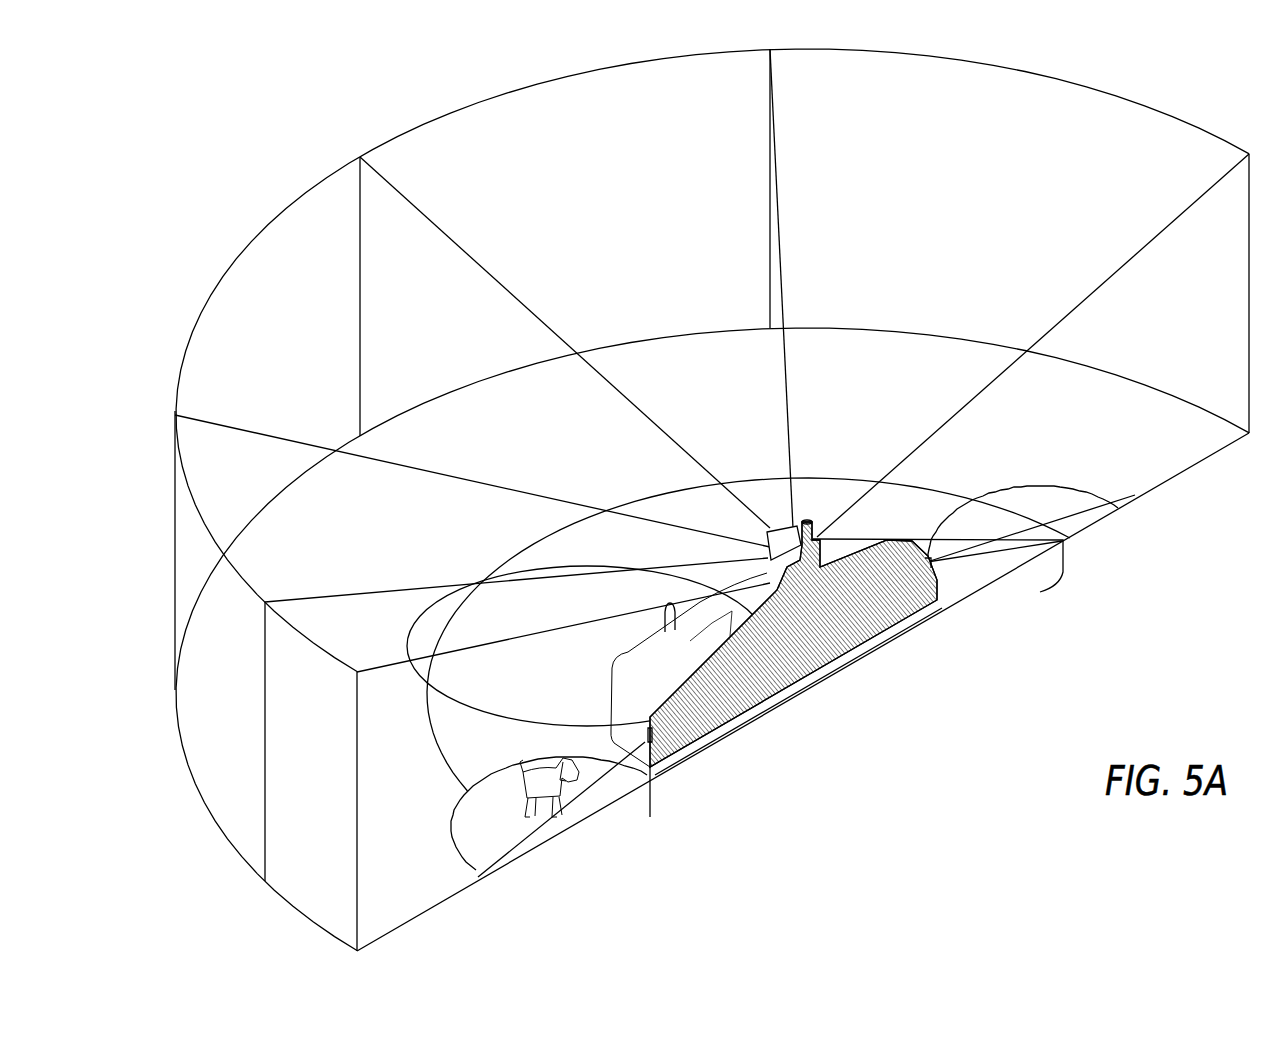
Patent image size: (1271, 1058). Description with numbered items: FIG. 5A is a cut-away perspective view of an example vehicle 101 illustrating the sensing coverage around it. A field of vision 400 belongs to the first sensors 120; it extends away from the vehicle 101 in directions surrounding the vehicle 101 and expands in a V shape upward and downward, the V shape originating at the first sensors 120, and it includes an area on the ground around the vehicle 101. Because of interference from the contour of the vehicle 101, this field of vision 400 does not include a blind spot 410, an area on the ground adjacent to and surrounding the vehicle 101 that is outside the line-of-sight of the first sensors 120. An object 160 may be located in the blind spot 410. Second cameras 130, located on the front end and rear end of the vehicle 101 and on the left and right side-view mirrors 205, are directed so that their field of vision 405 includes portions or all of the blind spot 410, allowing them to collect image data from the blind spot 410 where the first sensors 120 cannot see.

The vehicle 101 is at (820, 641).
The first sensors 120 is at (768, 543).
The second cameras 130 is at (668, 612).
The object 160 is at (587, 800).
The side-view mirrors 205 is at (663, 627).
The field of vision 400 is at (1150, 438).
The field of vision 405 is at (492, 616).
The blind spot 410 is at (819, 499).